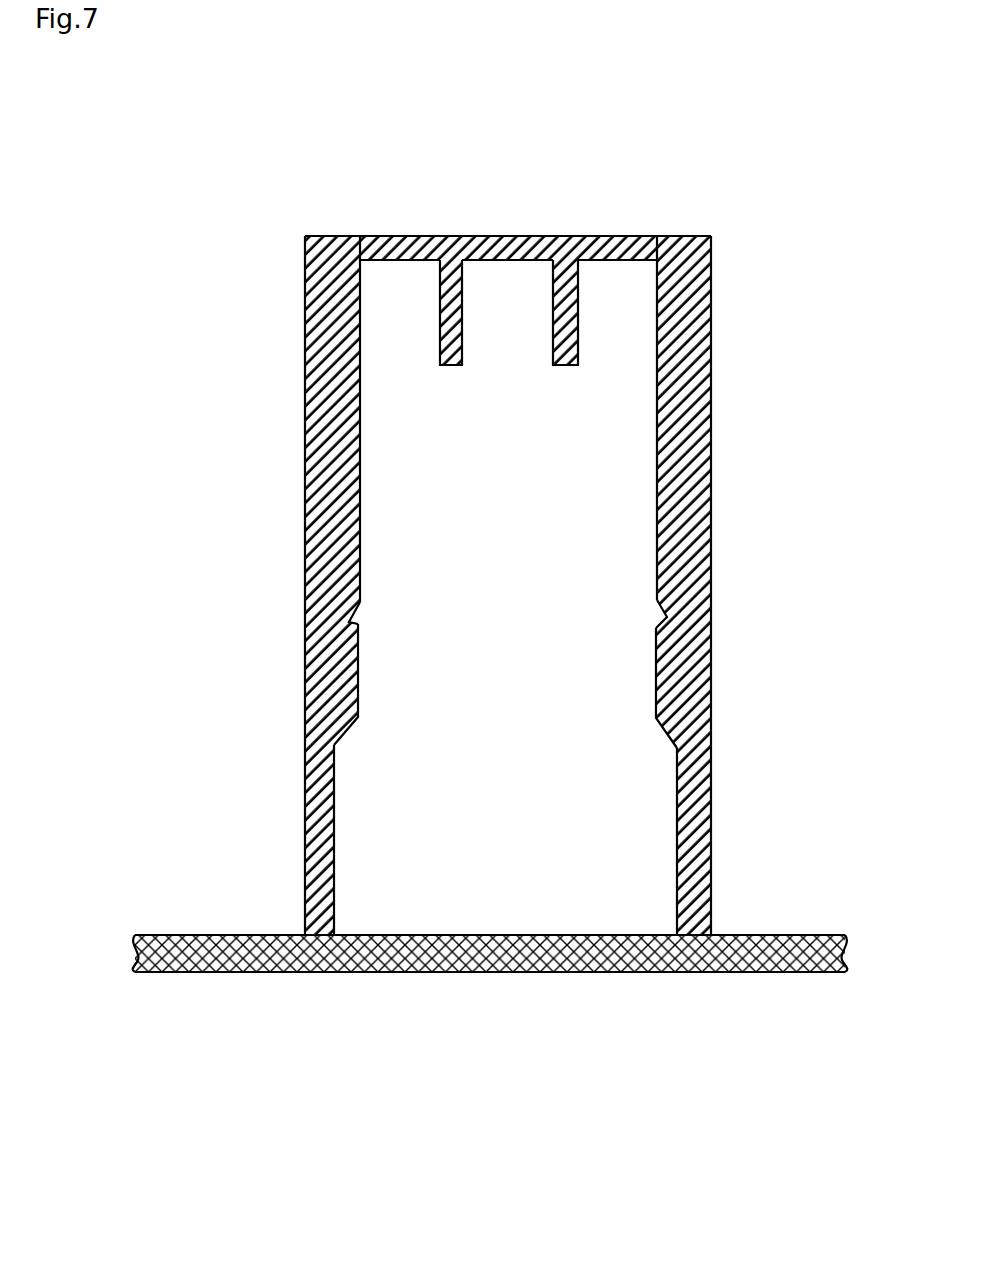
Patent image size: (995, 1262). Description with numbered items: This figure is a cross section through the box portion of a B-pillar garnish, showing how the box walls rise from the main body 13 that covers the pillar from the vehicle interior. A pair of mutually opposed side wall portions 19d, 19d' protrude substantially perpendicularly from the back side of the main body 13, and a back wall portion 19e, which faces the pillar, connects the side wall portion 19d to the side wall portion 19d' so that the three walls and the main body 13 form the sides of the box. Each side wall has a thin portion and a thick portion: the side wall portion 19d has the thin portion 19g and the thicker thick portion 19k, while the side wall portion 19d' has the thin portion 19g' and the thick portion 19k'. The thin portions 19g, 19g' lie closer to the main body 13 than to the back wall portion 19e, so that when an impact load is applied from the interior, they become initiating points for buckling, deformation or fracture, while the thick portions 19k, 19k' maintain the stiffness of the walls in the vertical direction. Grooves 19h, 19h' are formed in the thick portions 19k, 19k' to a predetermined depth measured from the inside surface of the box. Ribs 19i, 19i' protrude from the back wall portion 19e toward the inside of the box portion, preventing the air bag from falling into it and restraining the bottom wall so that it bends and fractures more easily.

The main body 13 is at (463, 972).
The back wall portion 19e is at (502, 236).
The side wall portion 19d is at (737, 492).
The side wall portion 19d' is at (263, 490).
The rib 19i is at (560, 363).
The rib 19i' is at (441, 363).
The thick portion 19k is at (598, 430).
The thick portion 19k' is at (423, 431).
The groove 19h is at (607, 619).
The groove 19h' is at (415, 619).
The thin portion 19g is at (635, 841).
The thin portion 19g' is at (382, 840).